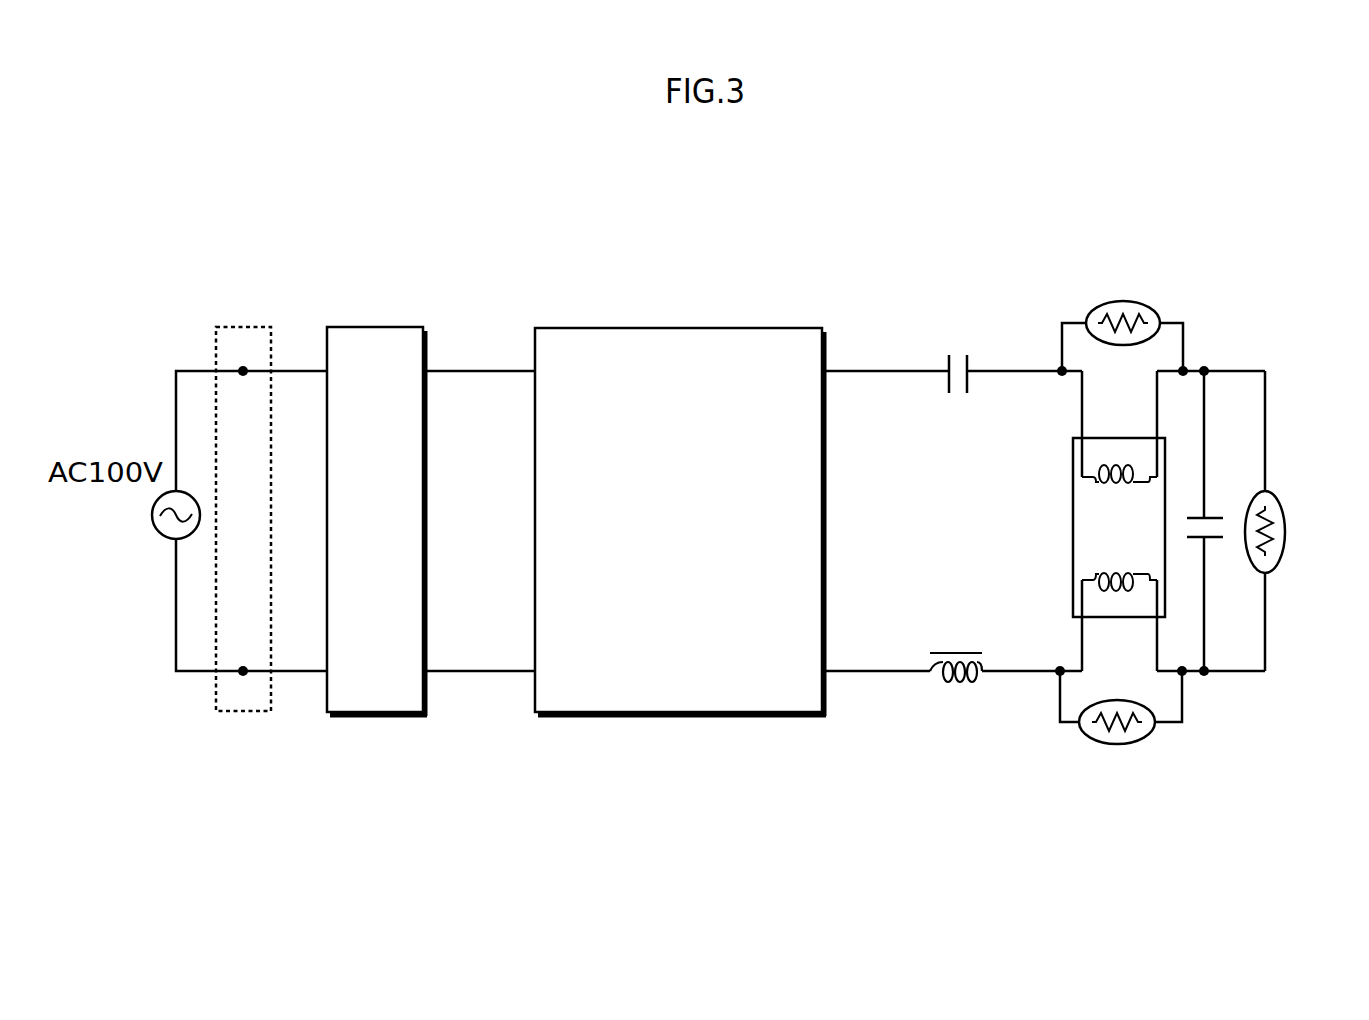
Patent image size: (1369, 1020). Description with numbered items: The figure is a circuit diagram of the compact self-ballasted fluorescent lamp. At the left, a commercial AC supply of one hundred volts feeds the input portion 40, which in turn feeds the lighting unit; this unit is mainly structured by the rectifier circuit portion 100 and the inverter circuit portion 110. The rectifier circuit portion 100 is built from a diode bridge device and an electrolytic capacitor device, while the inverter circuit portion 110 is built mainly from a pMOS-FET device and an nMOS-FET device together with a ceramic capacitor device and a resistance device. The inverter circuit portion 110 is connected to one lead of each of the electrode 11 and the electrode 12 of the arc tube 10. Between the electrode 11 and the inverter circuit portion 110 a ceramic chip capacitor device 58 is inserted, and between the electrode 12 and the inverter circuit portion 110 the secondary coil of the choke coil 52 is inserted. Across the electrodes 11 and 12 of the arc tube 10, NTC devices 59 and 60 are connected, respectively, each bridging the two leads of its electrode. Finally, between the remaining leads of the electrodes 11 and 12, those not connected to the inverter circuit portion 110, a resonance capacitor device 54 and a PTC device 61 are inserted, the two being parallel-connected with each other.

The AC power supply input portion 40 is at (243, 327).
The rectifier circuit portion 100 is at (388, 327).
The inverter circuit portion 110 is at (767, 328).
The ceramic chip capacitor device 58 is at (970, 365).
The choke coil 52 is at (960, 682).
The NTC device 59 is at (1145, 302).
The NTC device 60 is at (1120, 743).
The arc tube 10 is at (1197, 500).
The electrode 11 is at (1133, 468).
The electrode 12 is at (1135, 587).
The resonance capacitor device 54 is at (1220, 518).
The PTC device 61 is at (1277, 565).